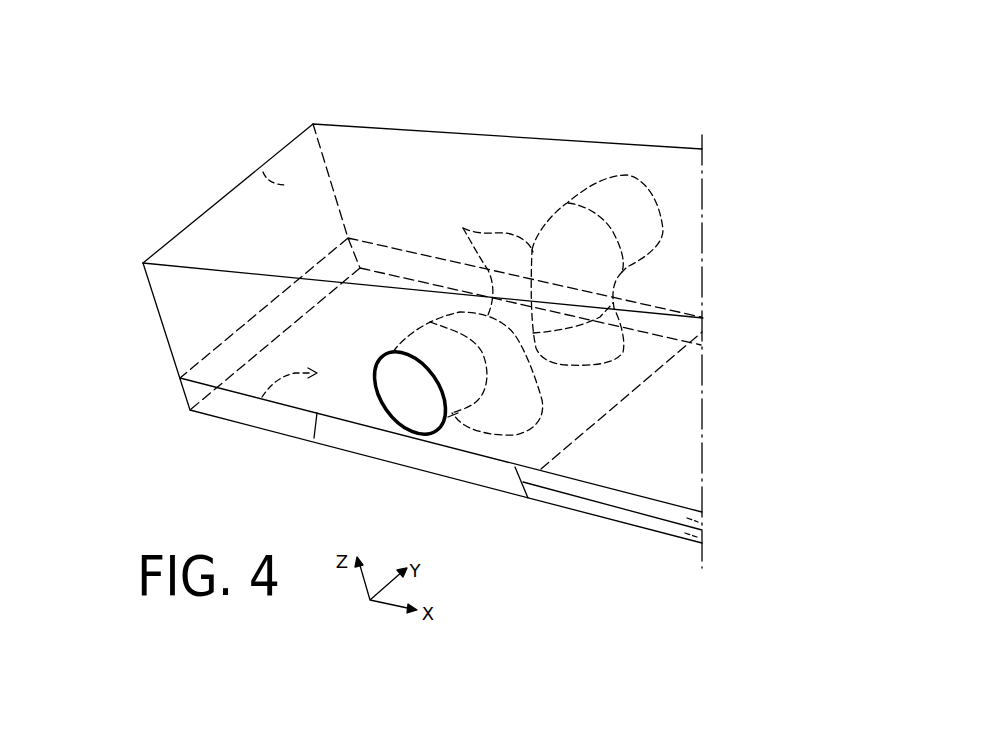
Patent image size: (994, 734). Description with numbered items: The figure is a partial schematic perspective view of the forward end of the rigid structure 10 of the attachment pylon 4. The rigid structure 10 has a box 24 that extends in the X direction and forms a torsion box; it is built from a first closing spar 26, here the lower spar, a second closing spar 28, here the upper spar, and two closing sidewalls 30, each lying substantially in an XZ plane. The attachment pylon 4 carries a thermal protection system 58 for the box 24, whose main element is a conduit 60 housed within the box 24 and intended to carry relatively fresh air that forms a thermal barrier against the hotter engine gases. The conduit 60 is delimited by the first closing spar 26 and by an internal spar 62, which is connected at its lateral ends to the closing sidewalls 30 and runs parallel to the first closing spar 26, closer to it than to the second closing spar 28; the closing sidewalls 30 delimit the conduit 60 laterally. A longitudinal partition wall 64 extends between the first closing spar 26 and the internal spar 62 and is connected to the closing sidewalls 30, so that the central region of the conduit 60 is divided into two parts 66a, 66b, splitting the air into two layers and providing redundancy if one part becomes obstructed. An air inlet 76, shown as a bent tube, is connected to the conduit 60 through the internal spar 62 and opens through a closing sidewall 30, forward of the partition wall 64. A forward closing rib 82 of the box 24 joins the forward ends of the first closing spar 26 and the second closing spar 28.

The attachment pylon 4 is at (434, 316).
The rigid structure 10 is at (434, 328).
The box 24 is at (650, 147).
The first closing spar 26 is at (277, 415).
The second closing spar 28 is at (237, 228).
The closing sidewall 30 is at (387, 157).
The thermal protection system 58 is at (245, 390).
The conduit 60 is at (435, 455).
The internal spar 62 is at (317, 413).
The longitudinal partition wall 64 is at (603, 503).
The part of the conduit 66a is at (702, 540).
The part of the conduit 66b is at (700, 523).
The air inlet 76 is at (463, 230).
The forward closing rib 82 is at (262, 167).